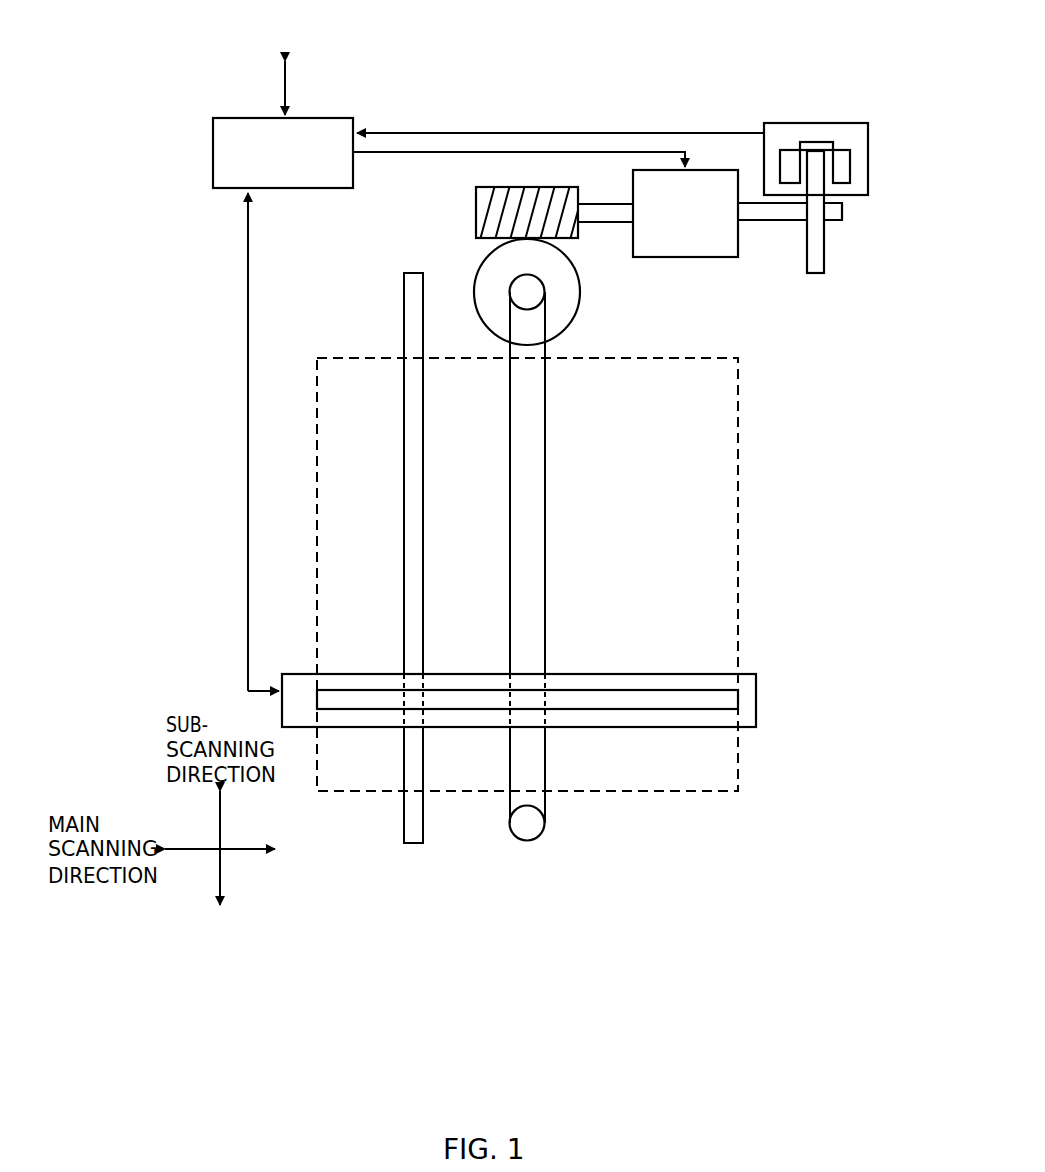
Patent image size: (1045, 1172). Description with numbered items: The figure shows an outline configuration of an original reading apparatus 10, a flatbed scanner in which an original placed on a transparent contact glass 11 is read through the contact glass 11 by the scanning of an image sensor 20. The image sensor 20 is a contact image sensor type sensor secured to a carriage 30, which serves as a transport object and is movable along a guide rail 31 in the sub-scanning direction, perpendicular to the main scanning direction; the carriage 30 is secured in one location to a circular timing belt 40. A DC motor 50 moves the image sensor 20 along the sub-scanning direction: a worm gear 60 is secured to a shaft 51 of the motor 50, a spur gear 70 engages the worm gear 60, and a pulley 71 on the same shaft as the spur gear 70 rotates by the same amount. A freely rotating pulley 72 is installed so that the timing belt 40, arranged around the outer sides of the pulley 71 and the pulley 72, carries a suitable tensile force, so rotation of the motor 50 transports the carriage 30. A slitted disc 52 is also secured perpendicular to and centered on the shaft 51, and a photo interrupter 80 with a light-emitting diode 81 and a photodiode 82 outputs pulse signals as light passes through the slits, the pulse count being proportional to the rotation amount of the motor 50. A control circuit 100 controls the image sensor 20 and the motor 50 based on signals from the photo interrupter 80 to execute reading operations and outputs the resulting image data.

The original reading apparatus 10 is at (562, 84).
The contact glass 11 is at (740, 472).
The image sensor 20 is at (655, 689).
The carriage 30 is at (758, 675).
The guide rail 31 is at (424, 290).
The timing belt 40 is at (546, 463).
The motor 50 is at (716, 258).
The shaft 51 is at (791, 222).
The disc 52 is at (807, 274).
The worm gear 60 is at (476, 205).
The spur gear 70 is at (581, 290).
The pulley 71 is at (540, 291).
The pulley 72 is at (522, 839).
The photo interrupter 80 is at (845, 123).
The light-emitting diode 81 is at (851, 163).
The photodiode 82 is at (780, 164).
The control circuit 100 is at (318, 118).